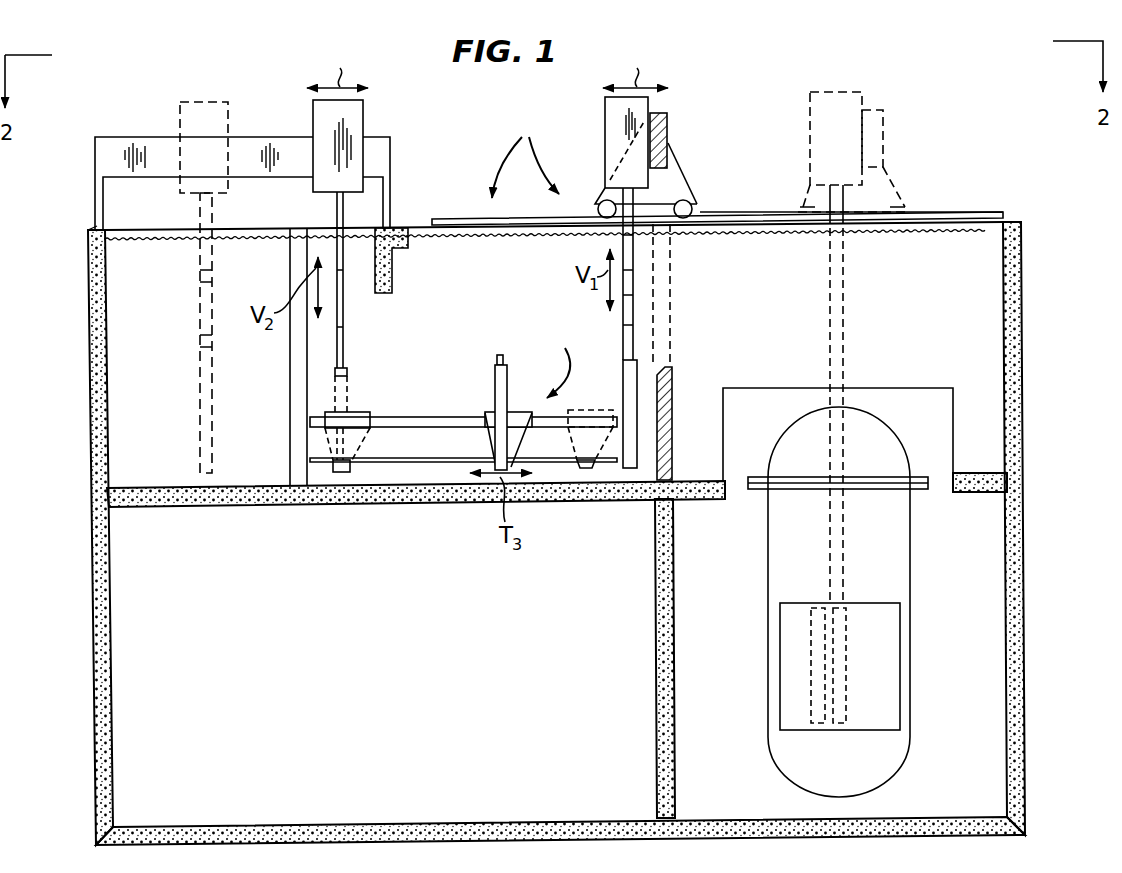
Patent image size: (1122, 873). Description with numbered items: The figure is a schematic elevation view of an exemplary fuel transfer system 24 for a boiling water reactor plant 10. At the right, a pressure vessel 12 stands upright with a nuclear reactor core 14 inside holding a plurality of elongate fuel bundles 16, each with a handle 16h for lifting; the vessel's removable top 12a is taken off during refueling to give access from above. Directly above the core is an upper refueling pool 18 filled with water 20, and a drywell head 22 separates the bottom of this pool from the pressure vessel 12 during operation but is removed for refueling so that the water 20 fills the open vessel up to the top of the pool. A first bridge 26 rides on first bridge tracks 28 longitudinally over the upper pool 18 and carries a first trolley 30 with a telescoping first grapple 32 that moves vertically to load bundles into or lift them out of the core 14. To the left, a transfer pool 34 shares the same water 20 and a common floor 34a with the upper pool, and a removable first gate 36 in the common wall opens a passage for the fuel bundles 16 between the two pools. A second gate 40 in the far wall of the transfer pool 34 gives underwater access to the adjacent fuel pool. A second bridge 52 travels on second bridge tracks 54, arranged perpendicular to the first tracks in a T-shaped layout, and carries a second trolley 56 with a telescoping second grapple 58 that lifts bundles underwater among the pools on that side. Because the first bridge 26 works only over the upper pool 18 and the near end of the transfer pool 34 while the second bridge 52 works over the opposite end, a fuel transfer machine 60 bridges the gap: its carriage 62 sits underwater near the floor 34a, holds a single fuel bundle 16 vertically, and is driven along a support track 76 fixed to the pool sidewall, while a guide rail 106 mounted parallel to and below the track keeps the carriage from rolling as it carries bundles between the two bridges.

The boiling water reactor plant 10 is at (556, 724).
The pressure vessel 12 is at (912, 552).
The removable top 12a is at (905, 440).
The nuclear reactor core 14 is at (900, 682).
The fuel bundles 16 is at (508, 396).
The handle 16h is at (500, 355).
The upper refueling pool 18 is at (1012, 331).
The water 20 is at (420, 229).
The drywell head 22 is at (908, 388).
The fuel transfer system 24 is at (525, 153).
The first bridge 26 is at (692, 172).
The first bridge tracks 28 is at (963, 212).
The first trolley 30 is at (604, 150).
The first grapple 32 is at (623, 331).
The transfer pool 34 is at (480, 317).
The floor 34a is at (403, 489).
The first gate 36 is at (673, 400).
The second gate 40 is at (290, 257).
The second bridge 52 is at (390, 156).
The second bridge tracks 54 is at (93, 229).
The second trolley 56 is at (363, 122).
The second grapple 58 is at (347, 330).
The fuel transfer machine 60 is at (562, 360).
The carriage 62 is at (490, 406).
The support track 76 is at (403, 417).
The guide rail 106 is at (397, 458).